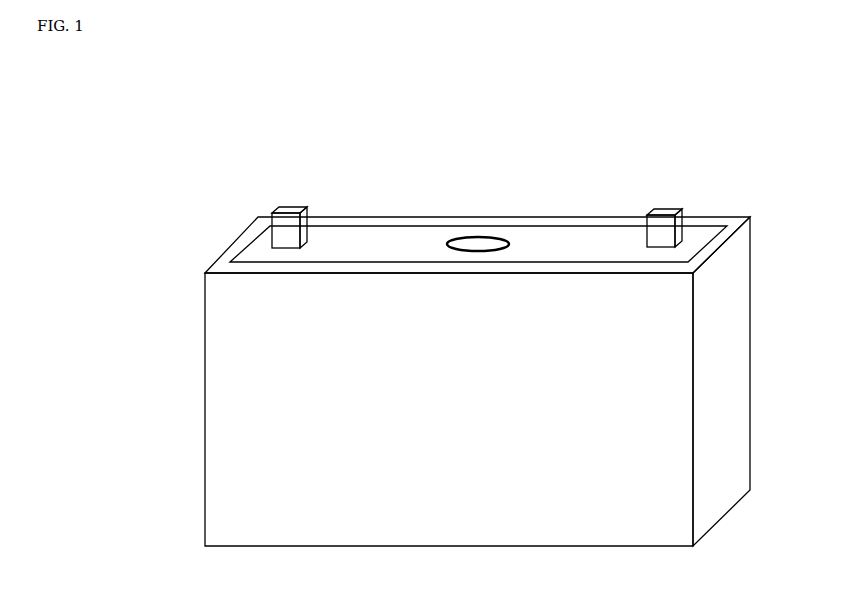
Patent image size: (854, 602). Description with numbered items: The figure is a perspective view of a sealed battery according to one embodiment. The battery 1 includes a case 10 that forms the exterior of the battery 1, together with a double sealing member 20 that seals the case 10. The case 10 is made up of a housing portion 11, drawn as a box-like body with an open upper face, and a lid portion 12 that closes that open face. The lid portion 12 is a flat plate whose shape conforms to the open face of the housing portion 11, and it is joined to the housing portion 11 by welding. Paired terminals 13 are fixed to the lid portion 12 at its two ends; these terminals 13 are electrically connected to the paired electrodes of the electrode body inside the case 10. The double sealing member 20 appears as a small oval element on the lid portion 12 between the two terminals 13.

The battery 1 is at (162, 116).
The case 10 is at (203, 254).
The housing portion 11 is at (218, 408).
The lid portion 12 is at (380, 237).
The terminals 13 is at (293, 207).
The double sealing member 20 is at (487, 228).